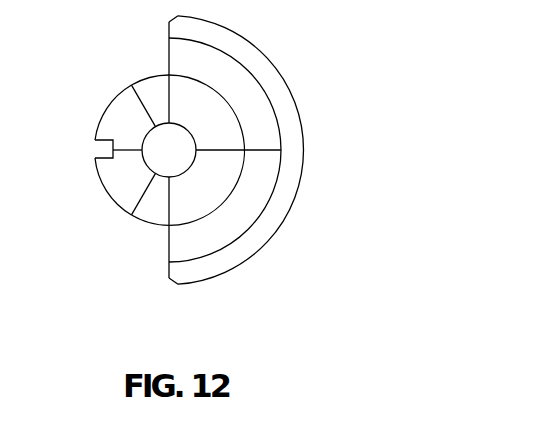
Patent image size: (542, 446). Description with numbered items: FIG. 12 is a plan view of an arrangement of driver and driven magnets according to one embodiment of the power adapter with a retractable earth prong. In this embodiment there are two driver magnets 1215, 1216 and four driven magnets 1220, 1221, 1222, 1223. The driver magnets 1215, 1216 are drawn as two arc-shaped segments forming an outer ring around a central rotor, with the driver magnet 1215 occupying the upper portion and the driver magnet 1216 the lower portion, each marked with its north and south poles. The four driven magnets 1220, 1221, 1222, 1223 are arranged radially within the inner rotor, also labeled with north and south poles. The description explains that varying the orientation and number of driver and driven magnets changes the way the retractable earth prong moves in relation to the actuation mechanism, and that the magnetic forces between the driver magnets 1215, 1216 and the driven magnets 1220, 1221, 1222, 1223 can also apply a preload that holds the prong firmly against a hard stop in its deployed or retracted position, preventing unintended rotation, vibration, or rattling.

The driver magnet 1215 is at (237, 83).
The driver magnet 1216 is at (233, 218).
The driven magnet 1220 is at (175, 97).
The driven magnet 1221 is at (123, 122).
The driven magnet 1222 is at (120, 186).
The driven magnet 1223 is at (177, 207).